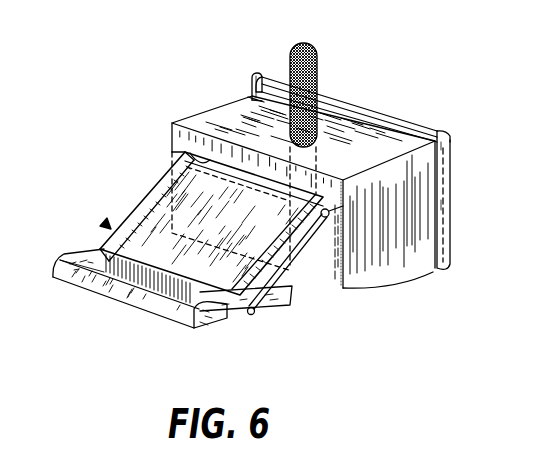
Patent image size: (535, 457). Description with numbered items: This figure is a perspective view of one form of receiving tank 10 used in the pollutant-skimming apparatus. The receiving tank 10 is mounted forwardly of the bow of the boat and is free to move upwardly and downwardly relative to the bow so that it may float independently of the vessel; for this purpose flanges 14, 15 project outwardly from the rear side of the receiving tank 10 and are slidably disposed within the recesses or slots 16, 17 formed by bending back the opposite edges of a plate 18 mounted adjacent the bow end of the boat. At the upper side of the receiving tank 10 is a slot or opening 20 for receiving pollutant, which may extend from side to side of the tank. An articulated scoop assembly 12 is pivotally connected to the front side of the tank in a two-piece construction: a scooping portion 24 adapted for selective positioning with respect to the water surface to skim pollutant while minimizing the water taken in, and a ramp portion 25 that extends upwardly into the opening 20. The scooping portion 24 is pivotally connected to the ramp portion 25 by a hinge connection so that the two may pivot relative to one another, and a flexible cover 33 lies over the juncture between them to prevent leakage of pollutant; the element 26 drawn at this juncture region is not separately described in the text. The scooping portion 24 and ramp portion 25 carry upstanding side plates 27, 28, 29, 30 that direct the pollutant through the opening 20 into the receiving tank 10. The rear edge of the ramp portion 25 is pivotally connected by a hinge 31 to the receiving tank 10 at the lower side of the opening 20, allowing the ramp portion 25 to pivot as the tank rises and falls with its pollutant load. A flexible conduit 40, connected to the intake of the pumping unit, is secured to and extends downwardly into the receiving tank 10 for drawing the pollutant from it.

The receiving tank 10 is at (212, 118).
The articulated scoop assembly 12 is at (106, 224).
The flange 14 is at (252, 94).
The flange 15 is at (449, 194).
The slot 16 is at (258, 73).
The slot 17 is at (428, 128).
The plate 18 is at (358, 117).
The opening 20 is at (176, 152).
The scooping portion 24 is at (143, 310).
The ramp portion 25 is at (190, 193).
The slide plate 26 is at (258, 312).
The side plate 27 is at (84, 259).
The side plate 28 is at (212, 312).
The side plate 29 is at (148, 208).
The side plate 30 is at (287, 253).
The hinge 31 is at (328, 220).
The flexible cover 33 is at (241, 318).
The flexible conduit 40 is at (293, 50).